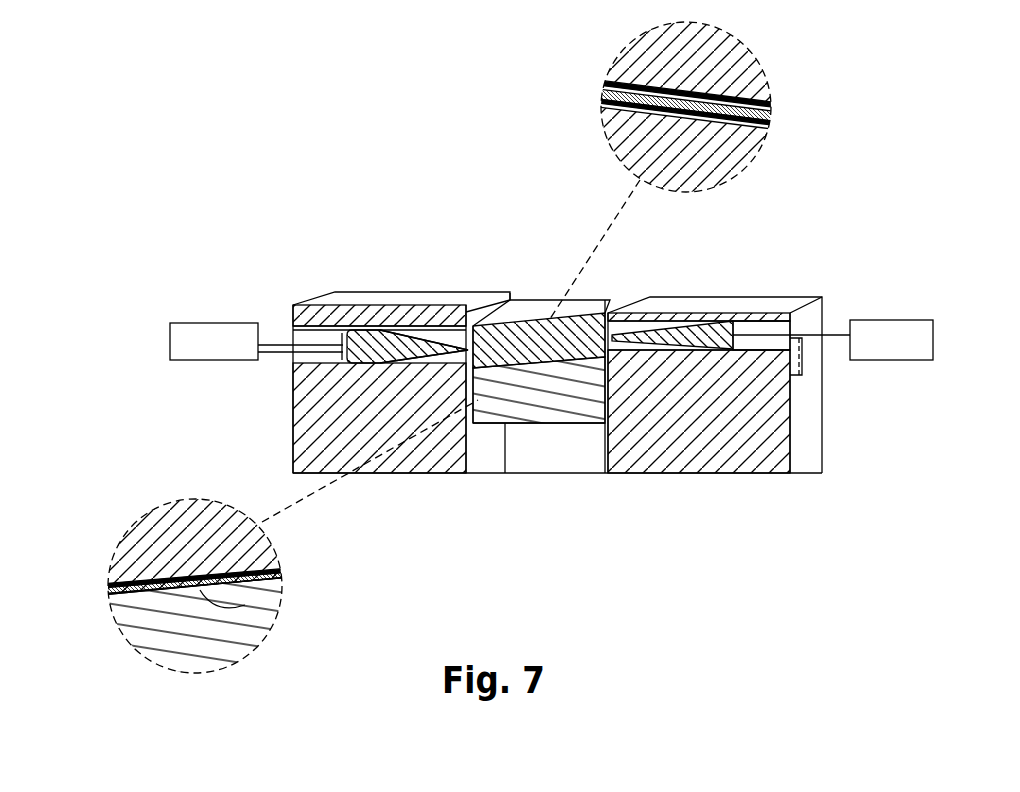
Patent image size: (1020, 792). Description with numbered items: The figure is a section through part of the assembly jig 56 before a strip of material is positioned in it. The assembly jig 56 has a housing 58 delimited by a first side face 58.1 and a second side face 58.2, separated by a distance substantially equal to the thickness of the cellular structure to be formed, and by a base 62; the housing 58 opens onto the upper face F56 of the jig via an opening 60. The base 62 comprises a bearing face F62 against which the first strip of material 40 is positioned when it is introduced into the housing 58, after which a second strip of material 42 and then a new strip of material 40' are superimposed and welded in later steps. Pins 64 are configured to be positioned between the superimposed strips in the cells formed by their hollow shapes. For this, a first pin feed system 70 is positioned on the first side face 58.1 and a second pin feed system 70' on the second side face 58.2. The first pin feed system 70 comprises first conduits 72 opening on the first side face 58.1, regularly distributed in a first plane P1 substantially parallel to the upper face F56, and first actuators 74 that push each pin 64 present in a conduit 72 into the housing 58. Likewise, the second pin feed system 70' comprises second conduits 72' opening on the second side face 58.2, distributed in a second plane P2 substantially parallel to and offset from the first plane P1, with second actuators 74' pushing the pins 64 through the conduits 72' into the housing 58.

The first strip of material 40 is at (160, 576).
The new strip of material 40' is at (646, 168).
The second strip of material 42 is at (767, 120).
The assembly jig 56 is at (722, 270).
The housing 58 is at (487, 454).
The first side face 58.1 is at (605, 461).
The second side face 58.2 is at (469, 474).
The opening 60 is at (518, 340).
The base 62 is at (550, 454).
The pins 64 is at (380, 343).
The first pin feed system 70 is at (700, 260).
The second pin feed system 70' is at (379, 273).
The first conduits 72 is at (791, 297).
The second conduits 72' is at (300, 305).
The first actuators 74 is at (891, 300).
The second actuators 74' is at (212, 304).
The upper face F56 is at (417, 300).
The bearing face F62 is at (260, 593).
The first plane P1 is at (520, 340).
The second plane P2 is at (445, 355).